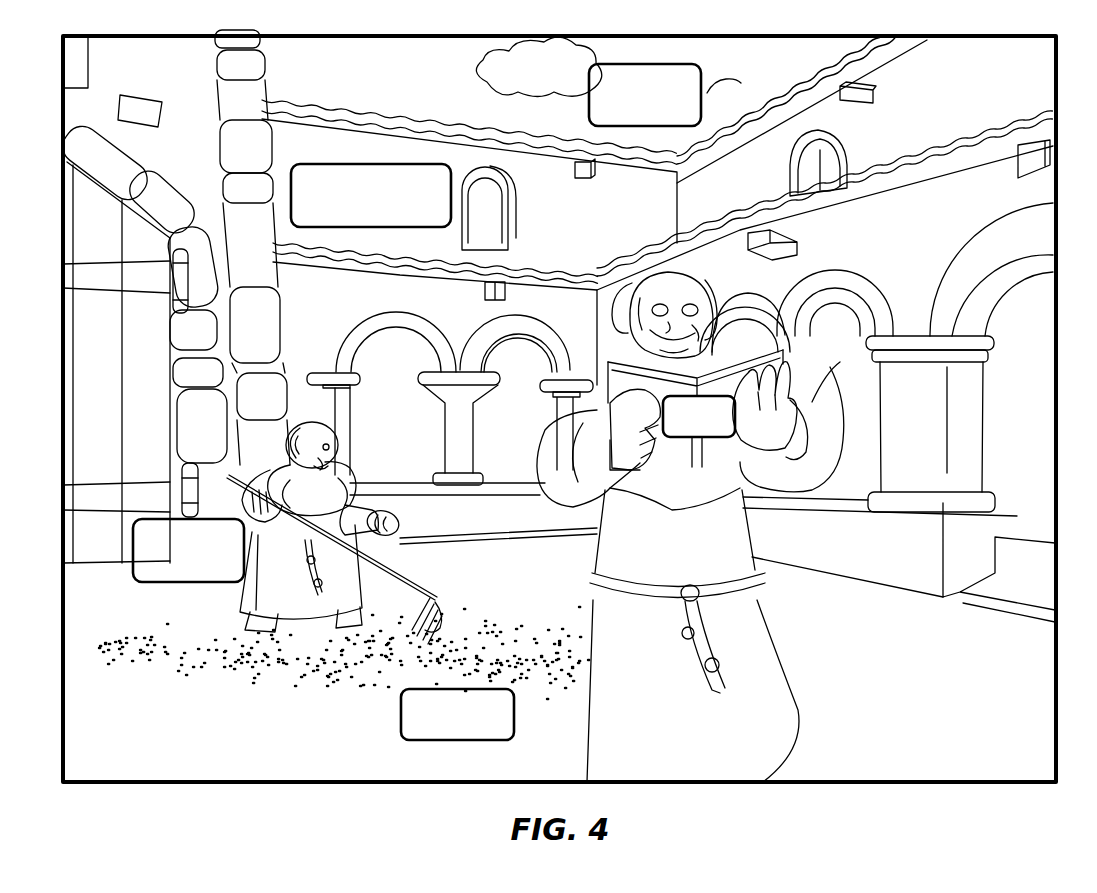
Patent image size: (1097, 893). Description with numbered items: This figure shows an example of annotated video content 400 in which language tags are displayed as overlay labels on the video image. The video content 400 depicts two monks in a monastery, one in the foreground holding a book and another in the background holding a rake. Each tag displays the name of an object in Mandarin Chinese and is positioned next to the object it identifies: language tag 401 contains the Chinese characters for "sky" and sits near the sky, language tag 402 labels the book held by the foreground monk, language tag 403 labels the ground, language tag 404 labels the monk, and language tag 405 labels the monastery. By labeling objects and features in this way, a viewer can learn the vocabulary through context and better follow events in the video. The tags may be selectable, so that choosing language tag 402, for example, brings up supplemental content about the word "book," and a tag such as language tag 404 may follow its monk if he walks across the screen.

The video content 400 is at (1021, 756).
The language tag 401 is at (703, 93).
The language tag 402 is at (777, 440).
The language tag 403 is at (423, 689).
The language tag 404 is at (180, 583).
The language tag 405 is at (412, 164).